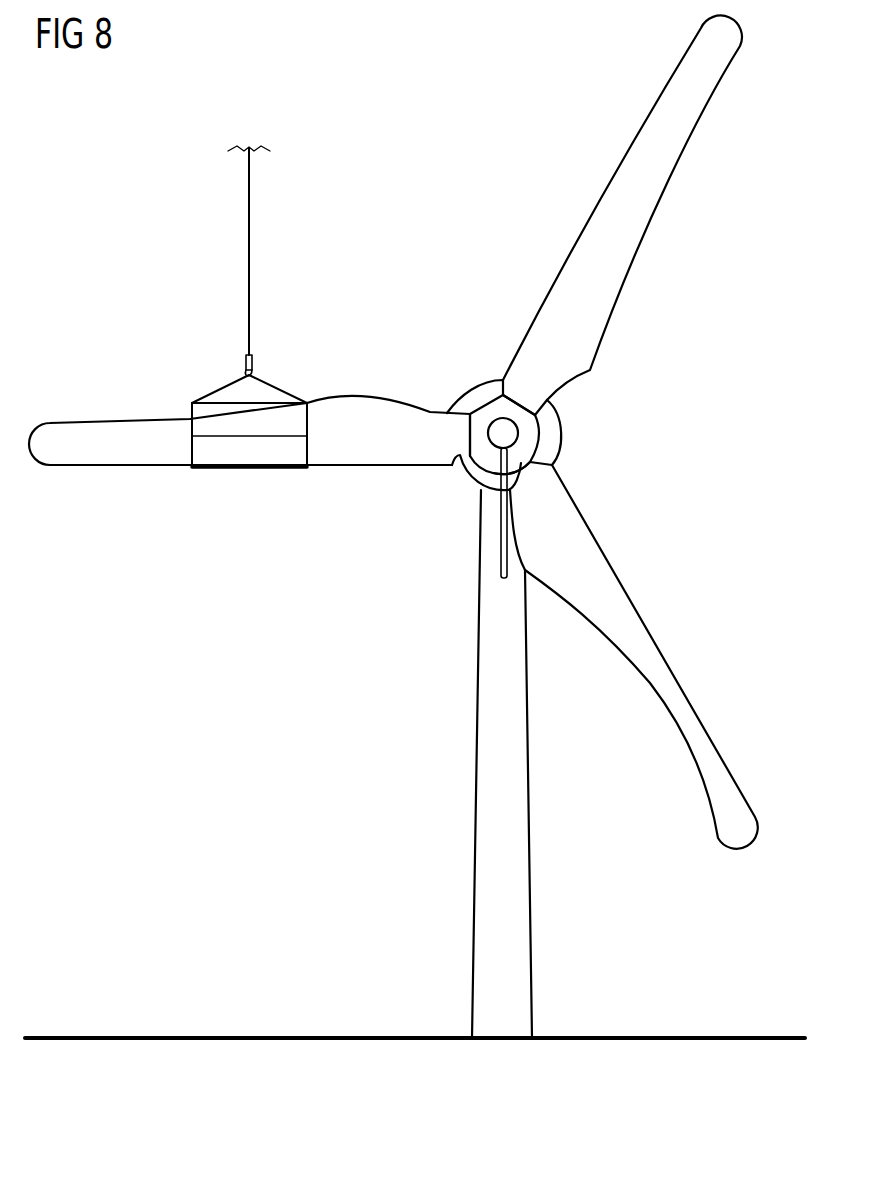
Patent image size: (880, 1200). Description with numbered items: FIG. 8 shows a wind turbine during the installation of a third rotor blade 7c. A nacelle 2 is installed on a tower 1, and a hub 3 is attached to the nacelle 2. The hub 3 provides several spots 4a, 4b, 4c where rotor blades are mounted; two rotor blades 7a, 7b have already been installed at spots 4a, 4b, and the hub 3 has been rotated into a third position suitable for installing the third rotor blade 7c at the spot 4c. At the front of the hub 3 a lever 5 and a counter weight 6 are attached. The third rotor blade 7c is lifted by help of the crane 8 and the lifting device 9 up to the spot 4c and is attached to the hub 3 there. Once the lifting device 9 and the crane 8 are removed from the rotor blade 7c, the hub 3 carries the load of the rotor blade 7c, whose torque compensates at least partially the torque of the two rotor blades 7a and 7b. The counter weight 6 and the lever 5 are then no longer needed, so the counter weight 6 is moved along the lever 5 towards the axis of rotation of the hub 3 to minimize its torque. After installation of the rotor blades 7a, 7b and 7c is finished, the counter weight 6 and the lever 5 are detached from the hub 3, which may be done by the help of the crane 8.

The tower 1 is at (518, 718).
The nacelle 2 is at (466, 470).
The hub 3 is at (485, 408).
The spot 4a is at (518, 463).
The spot 4b is at (518, 397).
The spot 4c is at (467, 437).
The lever 5 is at (500, 548).
The counter weight 6 is at (516, 433).
The rotor blade 7a is at (636, 624).
The rotor blade 7b is at (655, 210).
The third rotor blade 7c is at (115, 467).
The crane 8 is at (249, 249).
The lifting device 9 is at (192, 403).